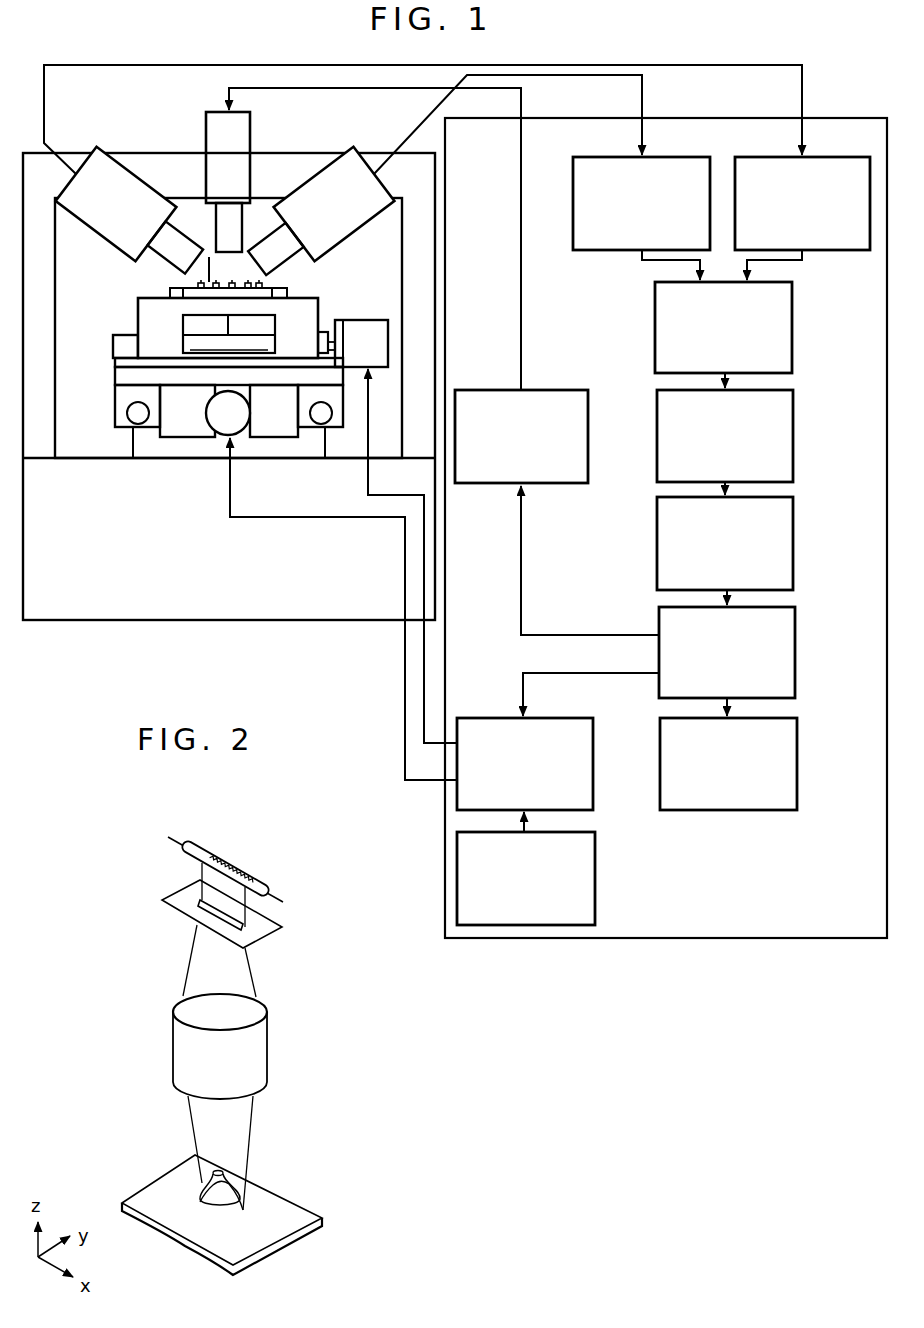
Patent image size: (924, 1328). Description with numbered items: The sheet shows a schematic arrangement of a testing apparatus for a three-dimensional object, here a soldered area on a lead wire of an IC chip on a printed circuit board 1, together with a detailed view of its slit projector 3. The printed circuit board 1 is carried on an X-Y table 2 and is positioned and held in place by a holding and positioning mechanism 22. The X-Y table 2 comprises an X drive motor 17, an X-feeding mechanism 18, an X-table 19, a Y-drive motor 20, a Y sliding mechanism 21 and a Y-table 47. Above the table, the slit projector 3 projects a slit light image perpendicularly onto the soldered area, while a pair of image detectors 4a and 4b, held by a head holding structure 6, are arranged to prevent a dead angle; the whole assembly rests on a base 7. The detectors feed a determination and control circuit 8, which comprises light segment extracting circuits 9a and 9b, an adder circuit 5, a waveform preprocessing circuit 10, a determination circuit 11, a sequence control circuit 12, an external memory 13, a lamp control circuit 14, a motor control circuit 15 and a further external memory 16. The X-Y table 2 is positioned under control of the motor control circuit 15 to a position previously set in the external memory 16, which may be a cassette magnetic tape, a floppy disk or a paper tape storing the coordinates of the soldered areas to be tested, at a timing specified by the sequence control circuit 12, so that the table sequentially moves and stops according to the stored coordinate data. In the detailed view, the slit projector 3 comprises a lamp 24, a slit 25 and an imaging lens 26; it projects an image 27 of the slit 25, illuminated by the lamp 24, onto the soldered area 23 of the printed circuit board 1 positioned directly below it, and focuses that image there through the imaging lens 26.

In FIG. 2, the printed circuit board 1 is at (280, 1228).
In FIG. 1, the X-Y table 2 is at (142, 289).
In FIG. 1, the slit projector 3 is at (206, 126).
In FIG. 2, the slit projector 3 is at (278, 984).
In FIG. 1, the image detector 4a is at (98, 158).
In FIG. 1, the image detector 4b is at (349, 158).
In FIG. 1, the adder circuit 5 is at (794, 326).
In FIG. 1, the head holding structure 6 is at (291, 153).
In FIG. 1, the base 7 is at (83, 458).
In FIG. 1, the determination and control circuit 8 is at (528, 940).
In FIG. 1, the light segment extracting circuit 9a is at (778, 155).
In FIG. 1, the light segment extracting circuit 9b is at (615, 155).
In FIG. 1, the waveform preprocessing circuit 10 is at (795, 428).
In FIG. 1, the determination circuit 11 is at (795, 545).
In FIG. 1, the sequence control circuit 12 is at (797, 652).
In FIG. 1, the external memory 13 is at (798, 768).
In FIG. 1, the lamp control circuit 14 is at (590, 426).
In FIG. 1, the motor control circuit 15 is at (595, 752).
In FIG. 1, the external memory 16 is at (597, 883).
In FIG. 1, the X drive motor 17 is at (220, 437).
In FIG. 1, the X-feeding mechanism 18 is at (115, 384).
In FIG. 1, the X-table 19 is at (120, 364).
In FIG. 1, the Y-drive motor 20 is at (357, 467).
In FIG. 1, the Y sliding mechanism 21 is at (115, 336).
In FIG. 1, the printed circuit board holding and positioning mechanism 22 is at (278, 288).
In FIG. 2, the soldered area 23 is at (206, 1197).
In FIG. 2, the lamp 24 is at (190, 846).
In FIG. 2, the slit 25 is at (178, 893).
In FIG. 2, the imaging lens 26 is at (173, 1037).
In FIG. 2, the image of the slit 27 is at (250, 1192).
In FIG. 1, the Y-table 47 is at (141, 310).